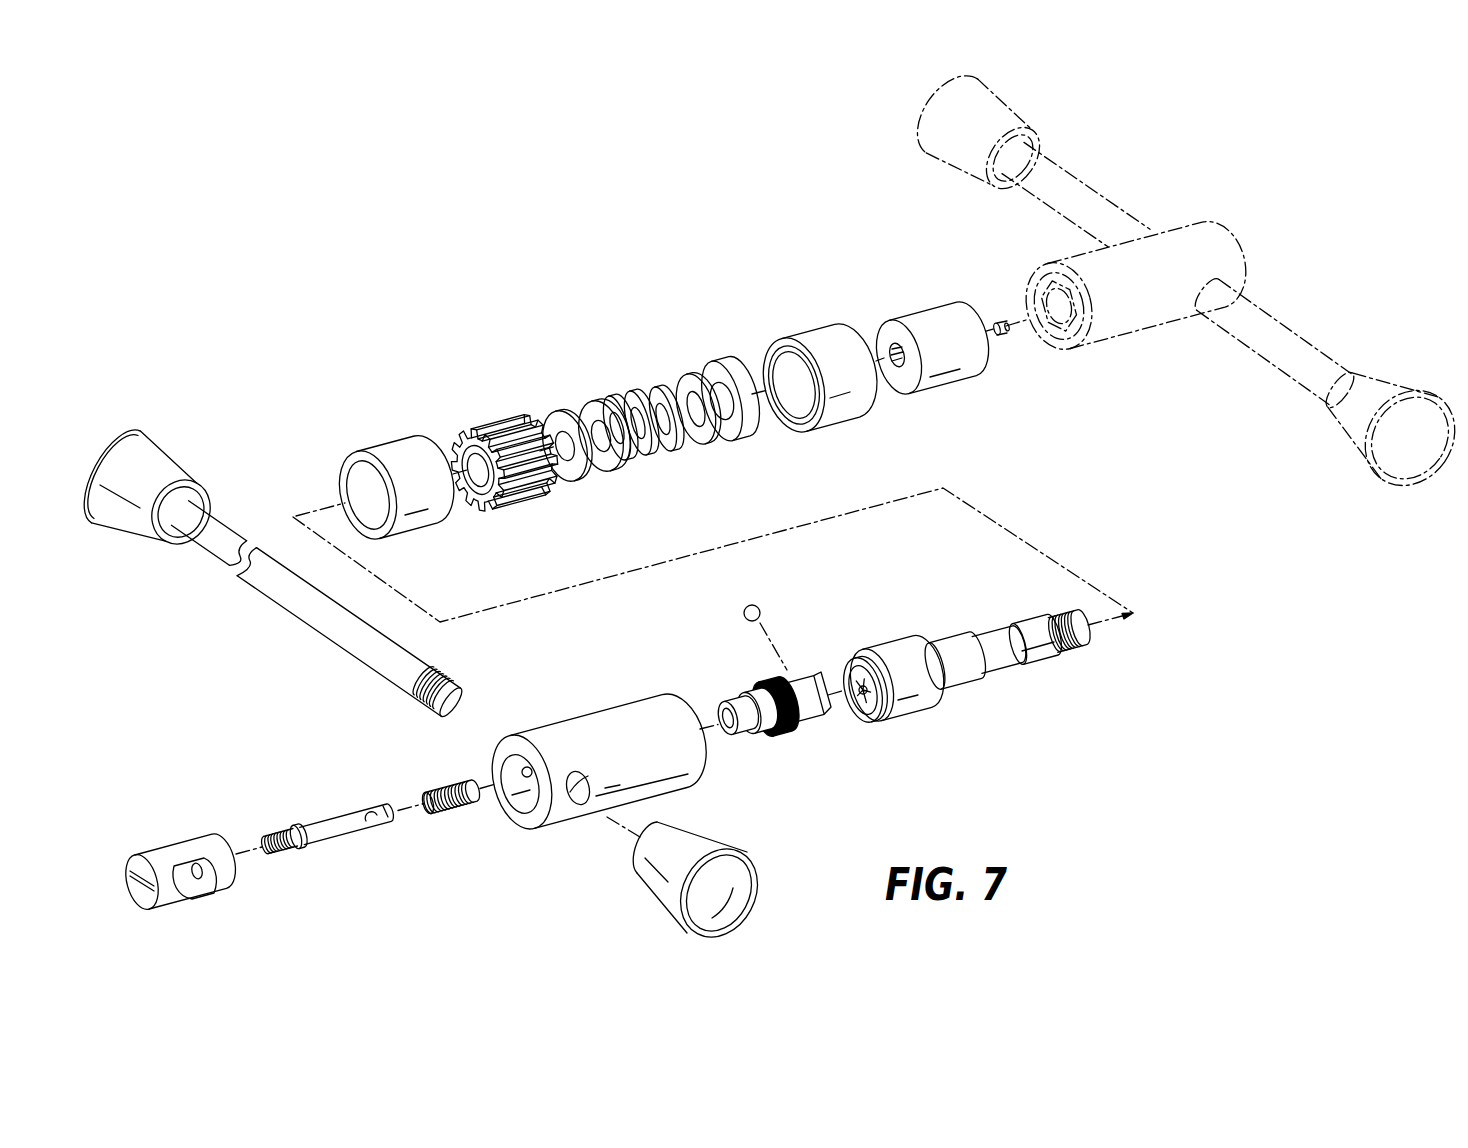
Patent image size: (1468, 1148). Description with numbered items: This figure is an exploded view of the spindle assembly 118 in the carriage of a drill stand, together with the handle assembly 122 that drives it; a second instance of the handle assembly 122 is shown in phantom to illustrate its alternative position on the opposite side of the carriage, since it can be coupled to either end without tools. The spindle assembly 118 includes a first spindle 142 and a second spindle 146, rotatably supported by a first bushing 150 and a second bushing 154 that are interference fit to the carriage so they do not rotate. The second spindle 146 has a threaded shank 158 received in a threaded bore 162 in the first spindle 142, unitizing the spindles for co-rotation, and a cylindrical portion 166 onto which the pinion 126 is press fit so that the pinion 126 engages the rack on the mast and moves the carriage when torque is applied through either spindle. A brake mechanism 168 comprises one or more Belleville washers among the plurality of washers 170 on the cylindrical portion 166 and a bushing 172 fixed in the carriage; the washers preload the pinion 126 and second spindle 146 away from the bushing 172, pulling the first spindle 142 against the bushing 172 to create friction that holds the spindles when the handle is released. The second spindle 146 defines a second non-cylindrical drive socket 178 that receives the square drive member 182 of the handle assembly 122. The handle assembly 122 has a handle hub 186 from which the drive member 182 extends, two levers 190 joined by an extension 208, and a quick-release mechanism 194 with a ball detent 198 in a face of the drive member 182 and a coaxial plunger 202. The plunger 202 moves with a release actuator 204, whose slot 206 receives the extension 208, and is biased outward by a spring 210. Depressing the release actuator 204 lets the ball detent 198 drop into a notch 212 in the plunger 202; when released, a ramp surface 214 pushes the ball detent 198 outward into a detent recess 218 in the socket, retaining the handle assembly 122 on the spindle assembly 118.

The spindle assembly 118 is at (652, 392).
The handle assembly 122 is at (776, 513).
The pinion 126 is at (494, 425).
The first spindle 142 is at (928, 349).
The second spindle 146 is at (913, 697).
The first bushing 150 is at (815, 335).
The second bushing 154 is at (387, 438).
The threaded shank 158 is at (1080, 645).
The threaded bore 162 is at (893, 393).
The cylindrical portion 166 is at (1038, 670).
The brake mechanism 168 is at (647, 374).
The washers 170 is at (682, 373).
The bushing 172 is at (740, 362).
The second non-cylindrical drive socket 178 is at (855, 698).
The drive member 182 is at (813, 713).
The handle hub 186 is at (577, 730).
The levers 190 is at (203, 540).
The quick-release mechanism 194 is at (301, 847).
The ball detent 198 is at (743, 613).
The plunger 202 is at (328, 836).
The release actuator 204 is at (179, 868).
The slot 206 is at (183, 890).
The extension 208 is at (367, 633).
The spring 210 is at (460, 813).
The notch 212 is at (367, 820).
The ramp surface 214 is at (390, 823).
The detent recess 218 is at (842, 667).